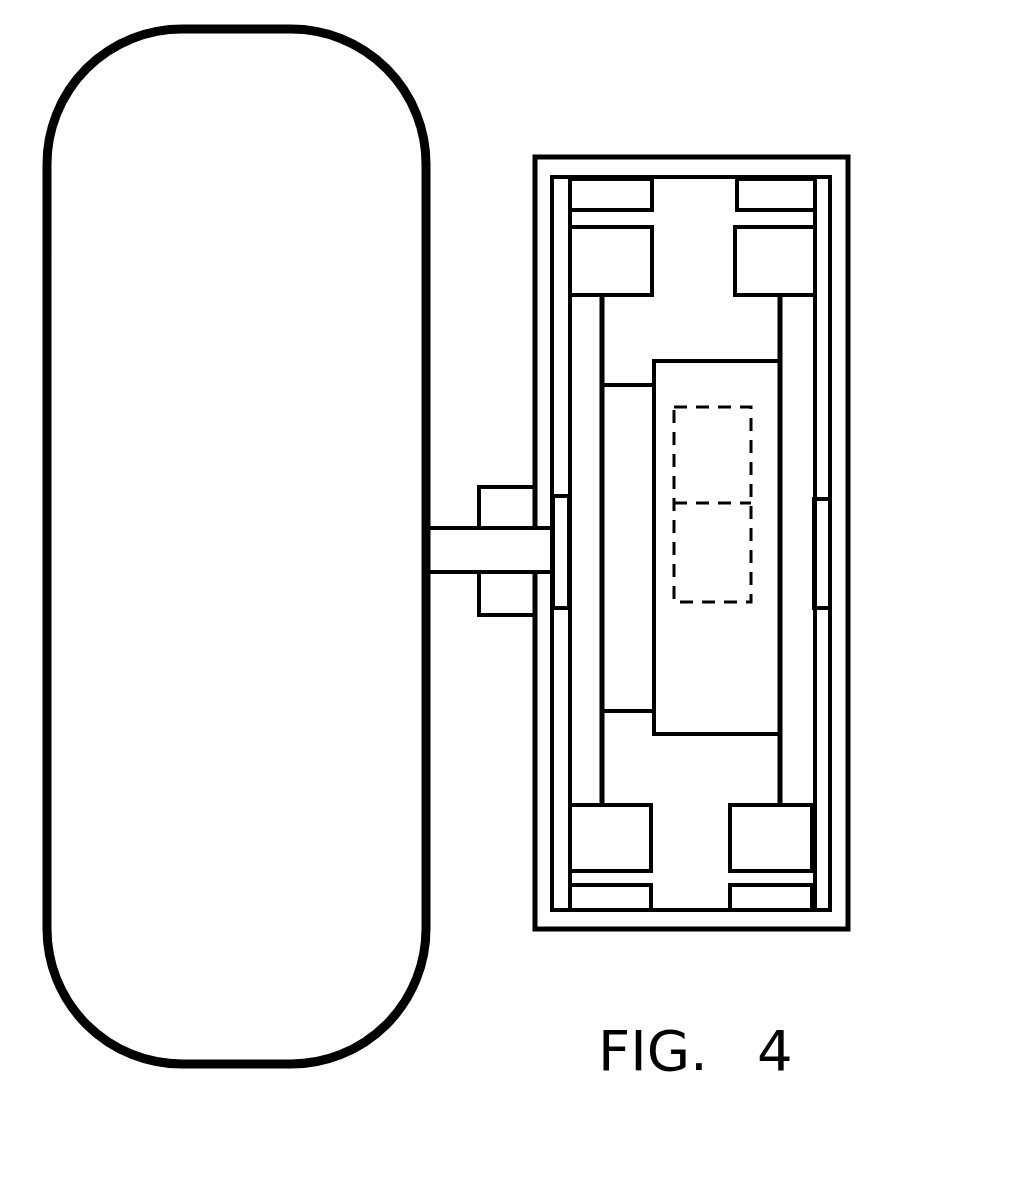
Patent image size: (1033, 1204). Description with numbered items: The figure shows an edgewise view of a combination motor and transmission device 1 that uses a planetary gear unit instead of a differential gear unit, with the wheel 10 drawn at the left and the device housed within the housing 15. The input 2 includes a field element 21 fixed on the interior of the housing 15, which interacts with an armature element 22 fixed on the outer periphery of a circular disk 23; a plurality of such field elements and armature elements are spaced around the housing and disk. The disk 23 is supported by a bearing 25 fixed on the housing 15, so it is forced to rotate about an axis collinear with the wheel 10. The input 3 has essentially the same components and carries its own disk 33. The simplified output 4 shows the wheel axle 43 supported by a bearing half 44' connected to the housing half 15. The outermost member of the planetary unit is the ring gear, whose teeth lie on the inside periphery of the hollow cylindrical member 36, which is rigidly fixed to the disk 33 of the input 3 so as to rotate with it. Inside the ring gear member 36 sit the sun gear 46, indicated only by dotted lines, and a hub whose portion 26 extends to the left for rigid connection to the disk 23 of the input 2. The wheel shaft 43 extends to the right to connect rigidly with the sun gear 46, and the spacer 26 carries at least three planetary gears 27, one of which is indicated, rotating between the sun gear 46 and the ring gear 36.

The actuator assembly 1 is at (683, 68).
The input 2 is at (636, 117).
The input 3 is at (775, 118).
The output 4 is at (377, 566).
The wheel 10 is at (375, 60).
The housing 15 is at (852, 258).
The field element 21 is at (654, 203).
The armature element 22 is at (654, 273).
The circular disk 23 is at (606, 346).
The bearing 25 is at (562, 496).
The hub portion 26 is at (620, 713).
The planetary gear 27 is at (765, 458).
The disk 33 is at (817, 363).
The hollow cylindrical member 36 is at (742, 738).
The wheel axle 43 is at (465, 528).
The bearing half 44' is at (494, 644).
The sun gear 46 is at (765, 553).